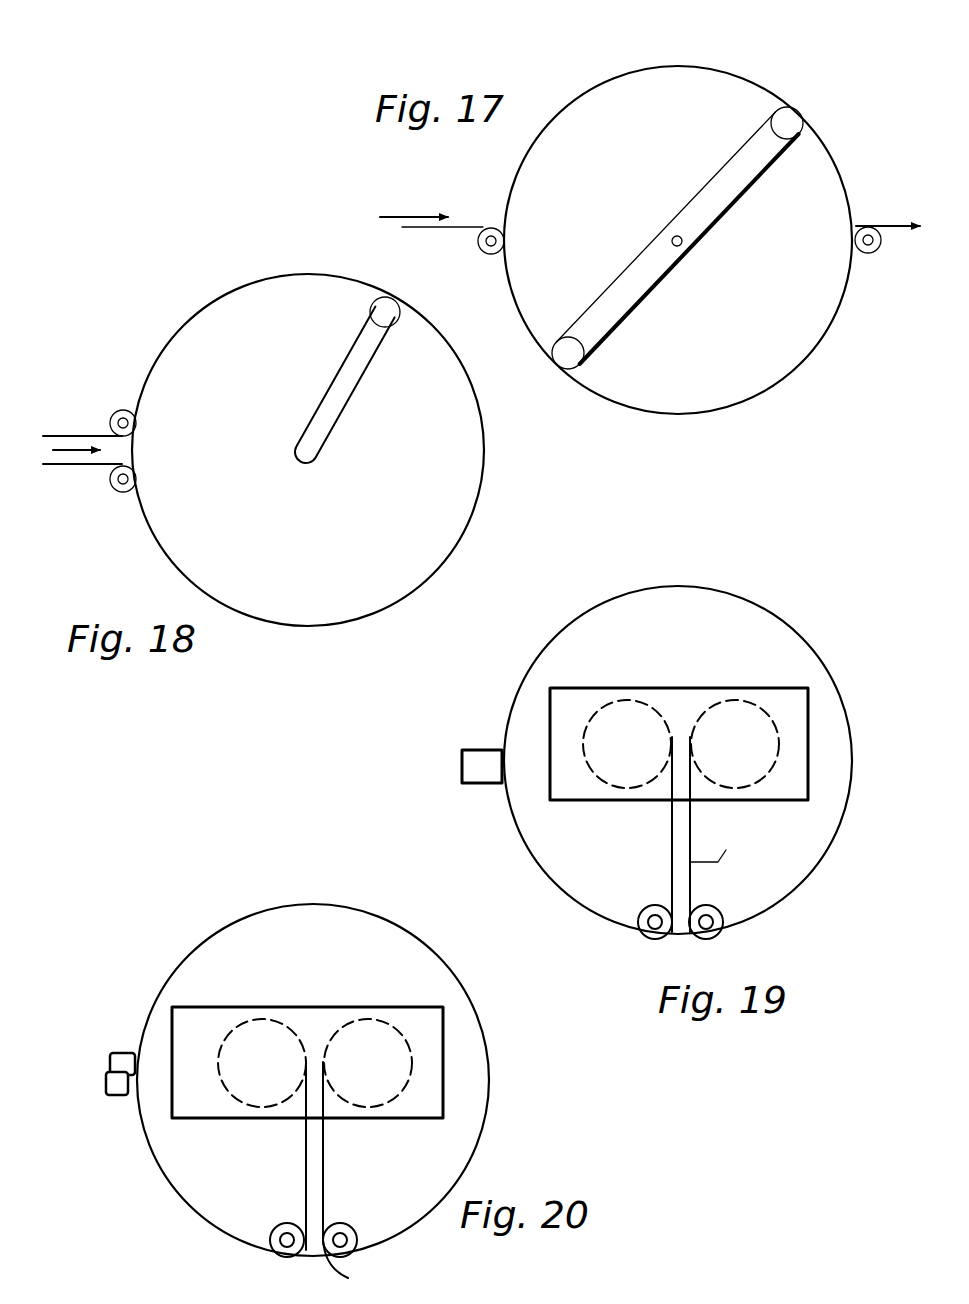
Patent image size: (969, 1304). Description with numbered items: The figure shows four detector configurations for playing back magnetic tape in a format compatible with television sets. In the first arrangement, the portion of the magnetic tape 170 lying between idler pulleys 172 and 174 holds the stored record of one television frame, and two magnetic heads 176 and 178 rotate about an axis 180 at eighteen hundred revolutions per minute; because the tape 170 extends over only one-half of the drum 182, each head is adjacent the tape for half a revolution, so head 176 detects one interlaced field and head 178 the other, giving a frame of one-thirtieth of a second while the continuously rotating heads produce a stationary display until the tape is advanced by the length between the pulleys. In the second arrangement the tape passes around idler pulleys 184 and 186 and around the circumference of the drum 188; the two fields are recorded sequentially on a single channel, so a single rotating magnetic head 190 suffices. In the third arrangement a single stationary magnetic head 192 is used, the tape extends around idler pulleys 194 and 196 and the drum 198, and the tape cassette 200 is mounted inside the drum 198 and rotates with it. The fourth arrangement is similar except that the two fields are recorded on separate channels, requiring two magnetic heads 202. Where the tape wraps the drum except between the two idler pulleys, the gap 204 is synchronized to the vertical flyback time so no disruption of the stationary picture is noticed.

In FIG. 17, the magnetic tape 170 is at (470, 227).
In FIG. 17, the idler pulley 172 is at (490, 255).
In FIG. 17, the idler pulley 174 is at (870, 255).
In FIG. 17, the magnetic head 176 is at (572, 360).
In FIG. 17, the magnetic head 178 is at (790, 122).
In FIG. 17, the axis 180 is at (685, 227).
In FIG. 17, the drum 182 is at (590, 102).
In FIG. 18, the idler pulley 184 is at (120, 410).
In FIG. 18, the idler pulley 186 is at (118, 490).
In FIG. 18, the drum 188 is at (225, 317).
In FIG. 18, the rotating magnetic head 190 is at (388, 308).
In FIG. 19, the magnetic head 192 is at (475, 755).
In FIG. 19, the idler pulley 194 is at (640, 923).
In FIG. 19, the idler pulley 196 is at (720, 925).
In FIG. 19, the drum 198 is at (773, 622).
In FIG. 19, the cassette 200 is at (662, 700).
In FIG. 20, the magnetic heads 202 is at (117, 1053).
In FIG. 20, the gap 204 is at (364, 1175).